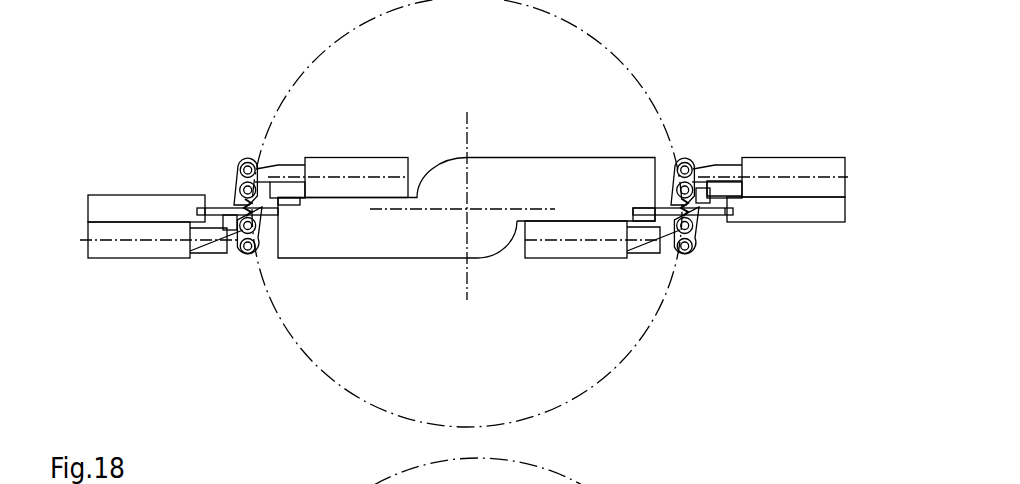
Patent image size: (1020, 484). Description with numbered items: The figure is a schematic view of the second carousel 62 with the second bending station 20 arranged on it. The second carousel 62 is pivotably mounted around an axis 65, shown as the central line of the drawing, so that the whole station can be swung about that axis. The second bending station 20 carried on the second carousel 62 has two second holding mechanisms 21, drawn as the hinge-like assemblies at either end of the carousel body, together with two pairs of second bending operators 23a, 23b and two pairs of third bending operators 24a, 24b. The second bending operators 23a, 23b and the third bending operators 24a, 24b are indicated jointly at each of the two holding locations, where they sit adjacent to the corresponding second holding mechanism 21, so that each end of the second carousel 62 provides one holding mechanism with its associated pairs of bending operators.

The second bending station 20 is at (482, 100).
The second holding mechanism 21 is at (226, 212).
The second bending operator 23a is at (212, 163).
The second bending operator 23b is at (466, 206).
The third bending operator 24a is at (466, 206).
The third bending operator 24b is at (466, 206).
The second carousel 62 is at (529, 178).
The axis 65 is at (465, 208).